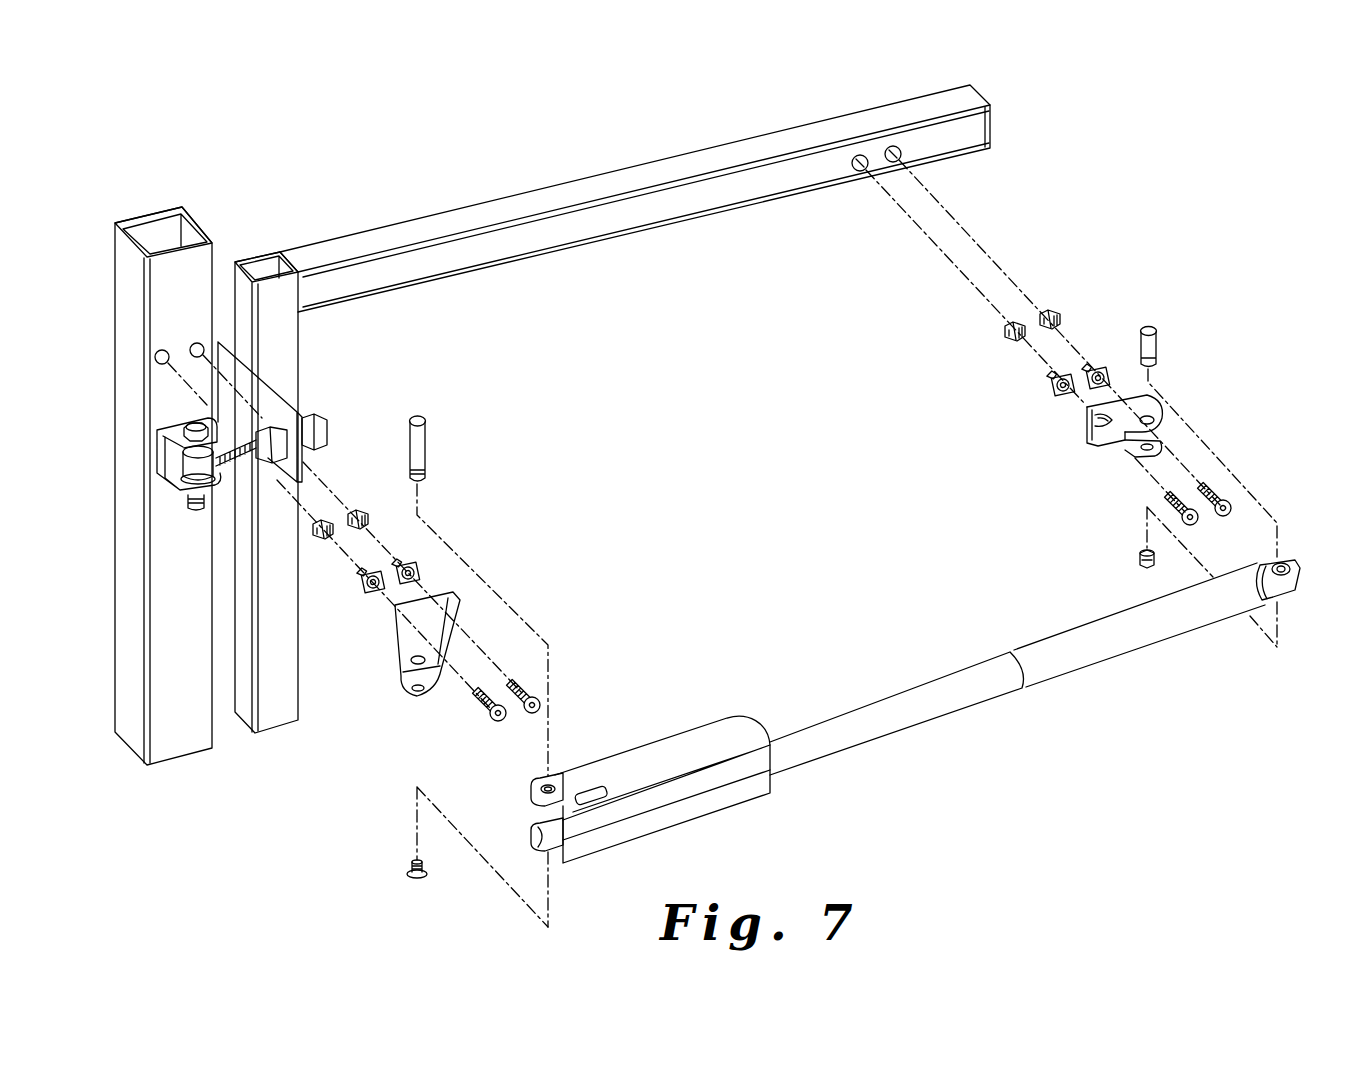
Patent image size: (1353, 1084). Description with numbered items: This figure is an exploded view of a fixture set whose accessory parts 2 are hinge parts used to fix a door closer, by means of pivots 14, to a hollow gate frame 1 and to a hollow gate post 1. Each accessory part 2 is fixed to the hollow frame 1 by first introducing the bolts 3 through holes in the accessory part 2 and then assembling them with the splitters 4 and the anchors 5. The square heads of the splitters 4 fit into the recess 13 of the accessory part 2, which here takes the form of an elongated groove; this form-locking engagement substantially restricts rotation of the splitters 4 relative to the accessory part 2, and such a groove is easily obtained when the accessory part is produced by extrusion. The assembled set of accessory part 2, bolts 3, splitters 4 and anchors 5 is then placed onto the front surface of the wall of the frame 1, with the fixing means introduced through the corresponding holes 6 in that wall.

The hollow gate frame / hollow gate post 1 is at (853, 122).
The accessory part 2 is at (403, 628).
The bolt 3 is at (500, 717).
The splitter 4 is at (405, 566).
The anchor 5 is at (356, 512).
The hole 6 is at (196, 343).
The recess 13 is at (1087, 427).
The pivot 14 is at (478, 425).